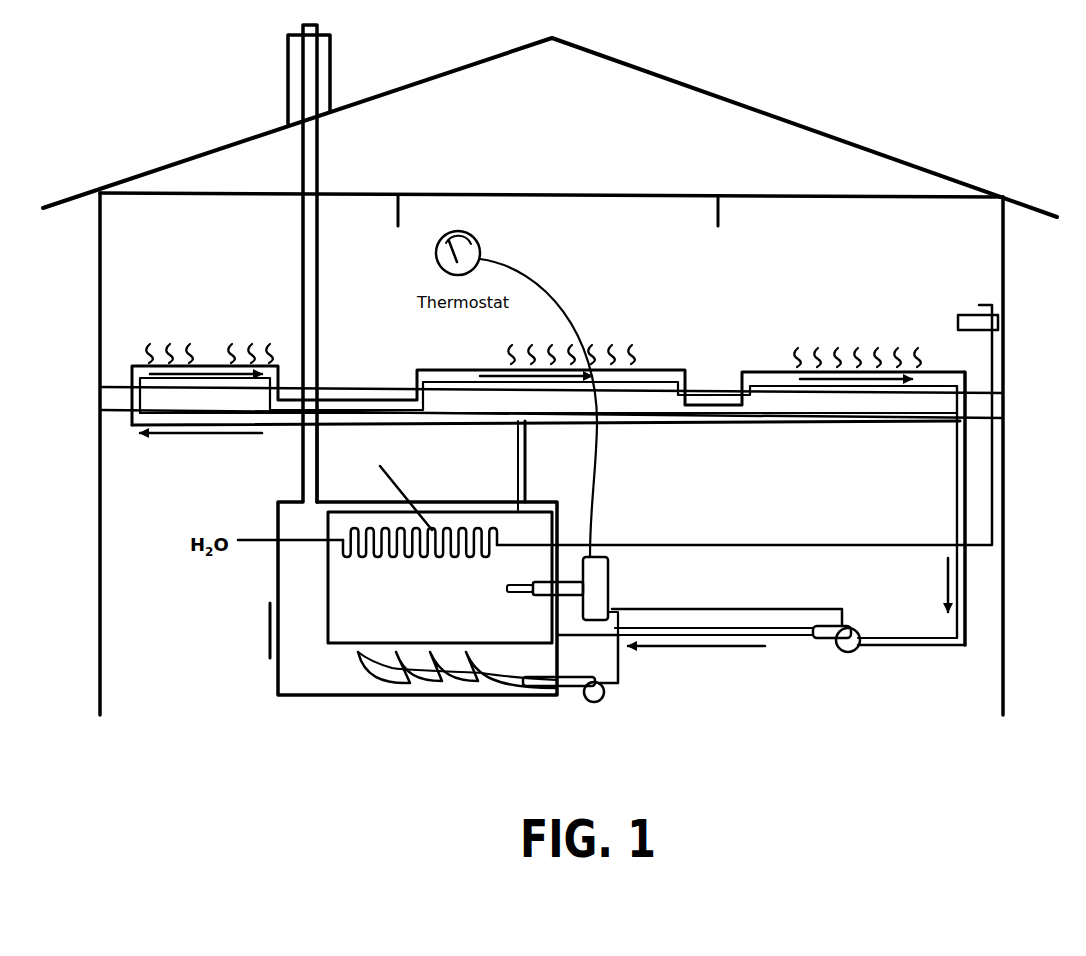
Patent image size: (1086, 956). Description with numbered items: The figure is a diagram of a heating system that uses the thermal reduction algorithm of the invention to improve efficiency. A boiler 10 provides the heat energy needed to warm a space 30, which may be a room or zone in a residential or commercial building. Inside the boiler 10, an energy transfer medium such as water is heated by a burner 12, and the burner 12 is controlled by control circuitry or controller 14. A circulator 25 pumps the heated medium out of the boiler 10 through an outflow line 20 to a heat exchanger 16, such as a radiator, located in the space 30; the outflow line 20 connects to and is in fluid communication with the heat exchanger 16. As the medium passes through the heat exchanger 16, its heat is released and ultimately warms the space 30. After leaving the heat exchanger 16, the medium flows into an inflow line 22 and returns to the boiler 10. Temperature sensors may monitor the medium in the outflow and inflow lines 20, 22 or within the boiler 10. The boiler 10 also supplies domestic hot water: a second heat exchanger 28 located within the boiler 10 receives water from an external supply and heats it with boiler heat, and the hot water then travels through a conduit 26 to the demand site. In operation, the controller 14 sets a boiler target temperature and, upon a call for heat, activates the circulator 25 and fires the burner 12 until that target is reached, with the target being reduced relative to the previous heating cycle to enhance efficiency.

The boiler 10 is at (268, 632).
The burner 12 is at (603, 694).
The controller 14 is at (597, 593).
The heat exchanger 16 is at (548, 494).
The outflow line 20 is at (486, 428).
The inflow line 22 is at (958, 477).
The circulator 25 is at (852, 652).
The conduit 26 is at (808, 547).
The heat exchanger 28 is at (397, 553).
The space 30 is at (809, 250).